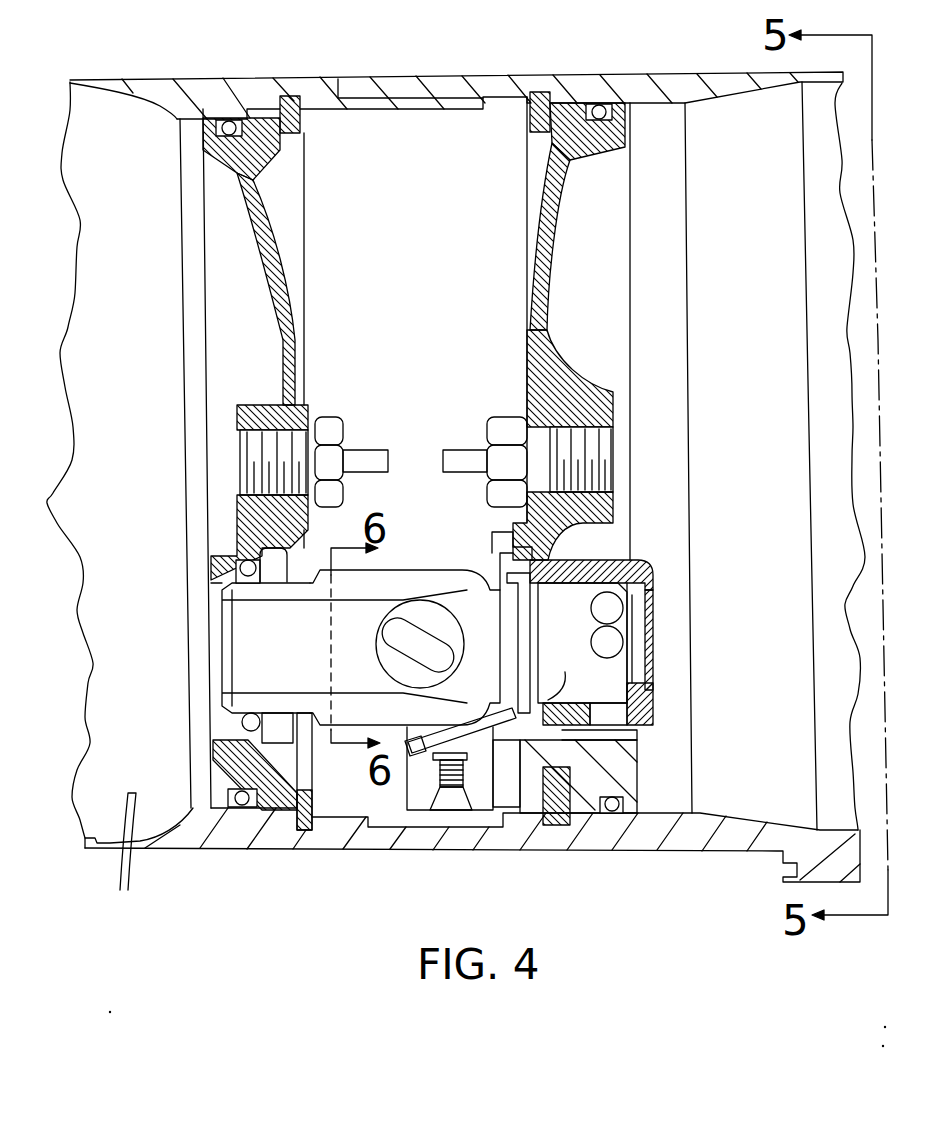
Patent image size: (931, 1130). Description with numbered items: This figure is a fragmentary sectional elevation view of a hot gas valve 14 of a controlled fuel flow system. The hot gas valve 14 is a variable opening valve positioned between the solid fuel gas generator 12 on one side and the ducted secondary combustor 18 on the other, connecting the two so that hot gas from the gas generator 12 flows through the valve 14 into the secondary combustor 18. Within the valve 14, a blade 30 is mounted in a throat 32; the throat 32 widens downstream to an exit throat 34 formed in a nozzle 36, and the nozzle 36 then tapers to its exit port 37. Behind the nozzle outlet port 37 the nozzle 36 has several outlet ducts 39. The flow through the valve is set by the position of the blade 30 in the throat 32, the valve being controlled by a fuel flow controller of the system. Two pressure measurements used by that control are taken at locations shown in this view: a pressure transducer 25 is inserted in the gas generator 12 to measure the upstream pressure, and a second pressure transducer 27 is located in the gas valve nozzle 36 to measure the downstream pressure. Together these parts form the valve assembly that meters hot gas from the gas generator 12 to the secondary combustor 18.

The solid fuel gas generator 12 is at (150, 285).
The ducted secondary combustor 18 is at (772, 285).
The hot gas valve 14 is at (424, 556).
The pressure transducer 25 is at (122, 827).
The pressure transducer 27 is at (495, 708).
The blade 30 is at (428, 645).
The throat 32 is at (375, 678).
The exit throat 34 is at (610, 692).
The nozzle 36 is at (647, 572).
The exit port 37 is at (650, 627).
The outlet ducts 39 is at (592, 640).